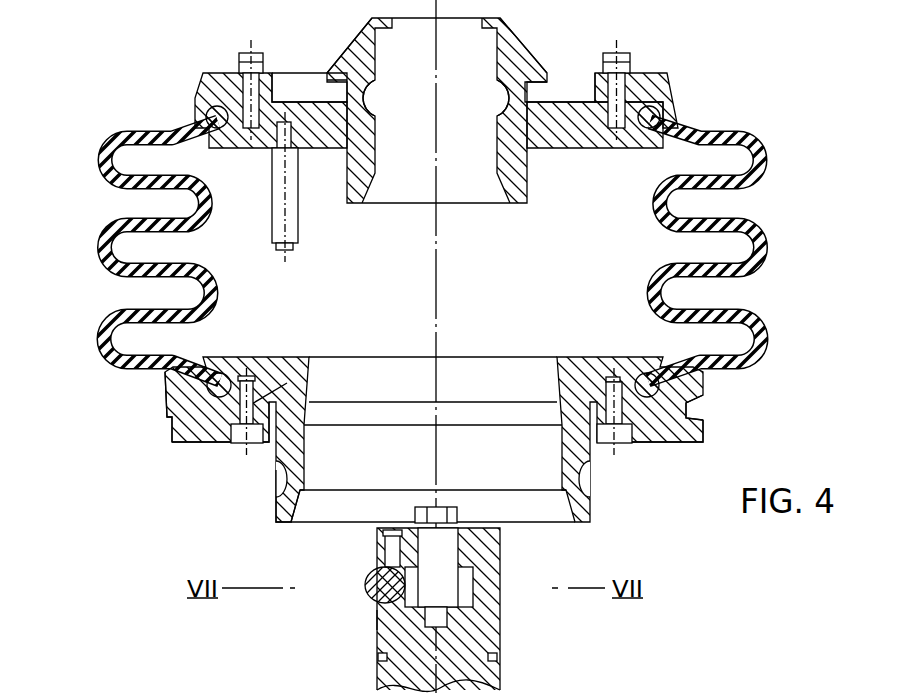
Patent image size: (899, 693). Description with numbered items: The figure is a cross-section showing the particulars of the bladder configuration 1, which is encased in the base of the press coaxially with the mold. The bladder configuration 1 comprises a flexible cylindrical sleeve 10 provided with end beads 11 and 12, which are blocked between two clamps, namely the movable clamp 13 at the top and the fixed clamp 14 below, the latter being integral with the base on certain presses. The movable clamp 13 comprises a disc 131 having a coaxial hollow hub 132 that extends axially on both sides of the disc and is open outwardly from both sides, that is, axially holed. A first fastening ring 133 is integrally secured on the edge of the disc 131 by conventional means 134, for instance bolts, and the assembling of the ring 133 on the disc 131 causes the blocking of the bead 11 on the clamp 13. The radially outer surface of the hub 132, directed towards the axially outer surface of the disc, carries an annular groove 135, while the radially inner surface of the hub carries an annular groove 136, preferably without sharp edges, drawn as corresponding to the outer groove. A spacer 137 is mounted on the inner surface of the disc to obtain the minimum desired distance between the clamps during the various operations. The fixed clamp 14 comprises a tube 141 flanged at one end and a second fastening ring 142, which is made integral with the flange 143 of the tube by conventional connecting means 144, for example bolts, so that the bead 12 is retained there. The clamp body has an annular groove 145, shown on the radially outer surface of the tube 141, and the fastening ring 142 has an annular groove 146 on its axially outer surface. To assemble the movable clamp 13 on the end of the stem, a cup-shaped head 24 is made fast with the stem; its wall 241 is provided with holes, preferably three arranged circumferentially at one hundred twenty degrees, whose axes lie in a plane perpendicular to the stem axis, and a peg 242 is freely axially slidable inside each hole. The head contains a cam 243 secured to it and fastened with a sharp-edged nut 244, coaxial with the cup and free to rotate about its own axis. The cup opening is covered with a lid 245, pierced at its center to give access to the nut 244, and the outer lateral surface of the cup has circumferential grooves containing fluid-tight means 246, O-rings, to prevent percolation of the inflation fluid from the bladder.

The bladder configuration 1 is at (615, 535).
The flexible cylindrical sleeve 10 is at (752, 183).
The end bead 11 is at (655, 125).
The end bead 12 is at (660, 390).
The movable clamp 13 is at (562, 51).
The fixed clamp 14 is at (526, 367).
The head 24 is at (480, 633).
The disc 131 is at (655, 92).
The hollow hub 132 is at (357, 167).
The first fastening ring 133 is at (217, 95).
The conventional means 134 is at (241, 60).
The annular groove 135 is at (319, 82).
The annular groove 136 is at (495, 96).
The spacer 137 is at (293, 233).
The tube 141 is at (290, 472).
The second fastening ring 142 is at (166, 417).
The flange 143 is at (240, 446).
The conventional connecting means 144 is at (618, 438).
The annular groove 145 is at (596, 495).
The annular groove 146 is at (703, 411).
The wall 241 is at (486, 576).
The peg 242 is at (367, 602).
The cam 243 is at (377, 617).
The nut 244 is at (411, 557).
The lid 245 is at (486, 528).
The fluid-tight means 246 is at (497, 657).